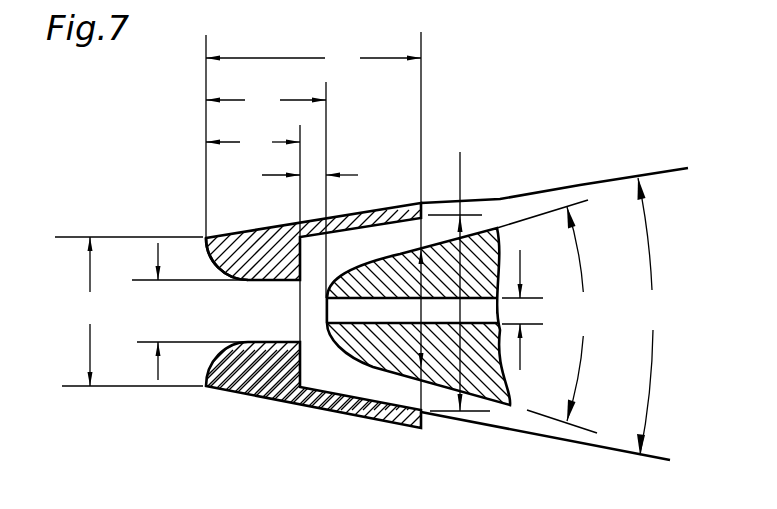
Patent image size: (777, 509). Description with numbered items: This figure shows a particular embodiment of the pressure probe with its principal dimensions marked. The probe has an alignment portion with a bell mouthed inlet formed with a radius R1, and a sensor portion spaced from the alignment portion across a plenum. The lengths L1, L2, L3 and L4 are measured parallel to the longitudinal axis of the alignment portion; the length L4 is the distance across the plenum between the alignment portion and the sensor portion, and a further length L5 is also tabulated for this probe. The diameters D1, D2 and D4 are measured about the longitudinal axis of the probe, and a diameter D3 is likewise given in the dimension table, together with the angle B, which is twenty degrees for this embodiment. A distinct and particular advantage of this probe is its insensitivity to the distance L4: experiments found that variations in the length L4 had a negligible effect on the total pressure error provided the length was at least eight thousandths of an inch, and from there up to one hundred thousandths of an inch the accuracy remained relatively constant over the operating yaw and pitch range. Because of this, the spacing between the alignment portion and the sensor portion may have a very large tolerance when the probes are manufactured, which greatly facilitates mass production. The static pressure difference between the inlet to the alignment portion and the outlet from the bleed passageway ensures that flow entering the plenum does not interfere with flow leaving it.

The length L1 is at (253, 256).
The length L2 is at (266, 190).
The length L3 is at (313, 230).
The length across the plenum L4 is at (322, 186).
The length L5 is at (421, 333).
The diameter D1 is at (129, 311).
The diameter D2 is at (191, 311).
The diameter D3 is at (460, 152).
The diameter D4 is at (522, 310).
The radius of the bell mouthed inlet R1 is at (228, 265).
The angle B is at (649, 316).